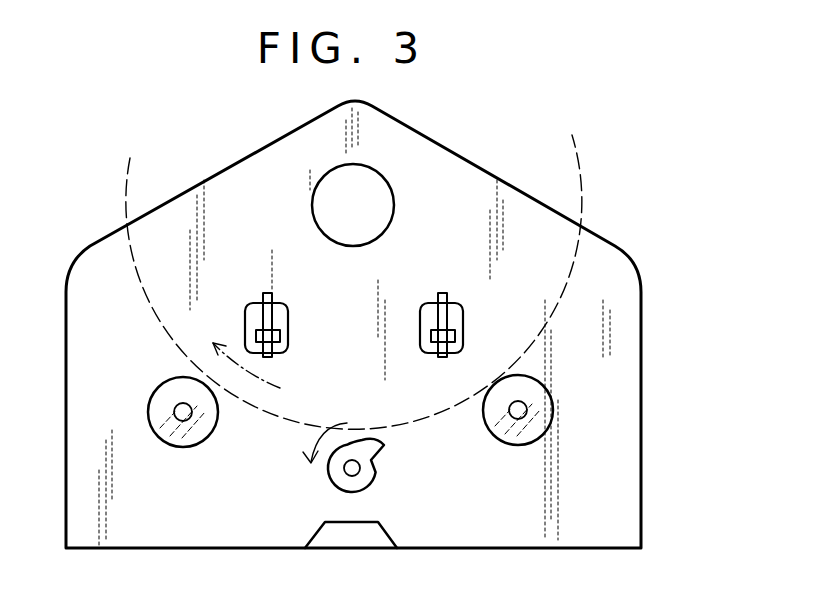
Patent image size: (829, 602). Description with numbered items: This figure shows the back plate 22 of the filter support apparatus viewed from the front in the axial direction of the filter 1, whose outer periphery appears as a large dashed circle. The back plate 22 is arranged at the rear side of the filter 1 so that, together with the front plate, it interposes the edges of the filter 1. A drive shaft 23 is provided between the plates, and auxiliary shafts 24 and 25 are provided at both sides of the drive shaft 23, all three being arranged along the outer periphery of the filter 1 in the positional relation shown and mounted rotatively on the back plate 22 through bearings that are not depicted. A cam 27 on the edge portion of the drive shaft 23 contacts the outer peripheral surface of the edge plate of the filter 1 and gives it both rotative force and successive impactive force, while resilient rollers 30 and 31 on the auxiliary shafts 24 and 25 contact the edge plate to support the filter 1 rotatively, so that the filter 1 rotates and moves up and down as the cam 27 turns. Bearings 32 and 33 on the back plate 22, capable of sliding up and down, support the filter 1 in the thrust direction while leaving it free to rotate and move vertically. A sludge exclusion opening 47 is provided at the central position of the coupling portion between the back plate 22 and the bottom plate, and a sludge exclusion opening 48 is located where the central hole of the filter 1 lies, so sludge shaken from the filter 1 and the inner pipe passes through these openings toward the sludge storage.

The filter 1 is at (583, 208).
The back plate 22 is at (625, 325).
The drive shaft 23 is at (360, 470).
The auxiliary shaft 24 is at (552, 438).
The auxiliary shaft 25 is at (184, 421).
The cam 27 is at (348, 475).
The resilient roller 30 is at (513, 445).
The resilient roller 31 is at (148, 439).
The bearing 32 is at (450, 323).
The bearing 33 is at (275, 320).
The sludge exclusion opening 47 is at (365, 537).
The sludge exclusion opening 48 is at (382, 200).